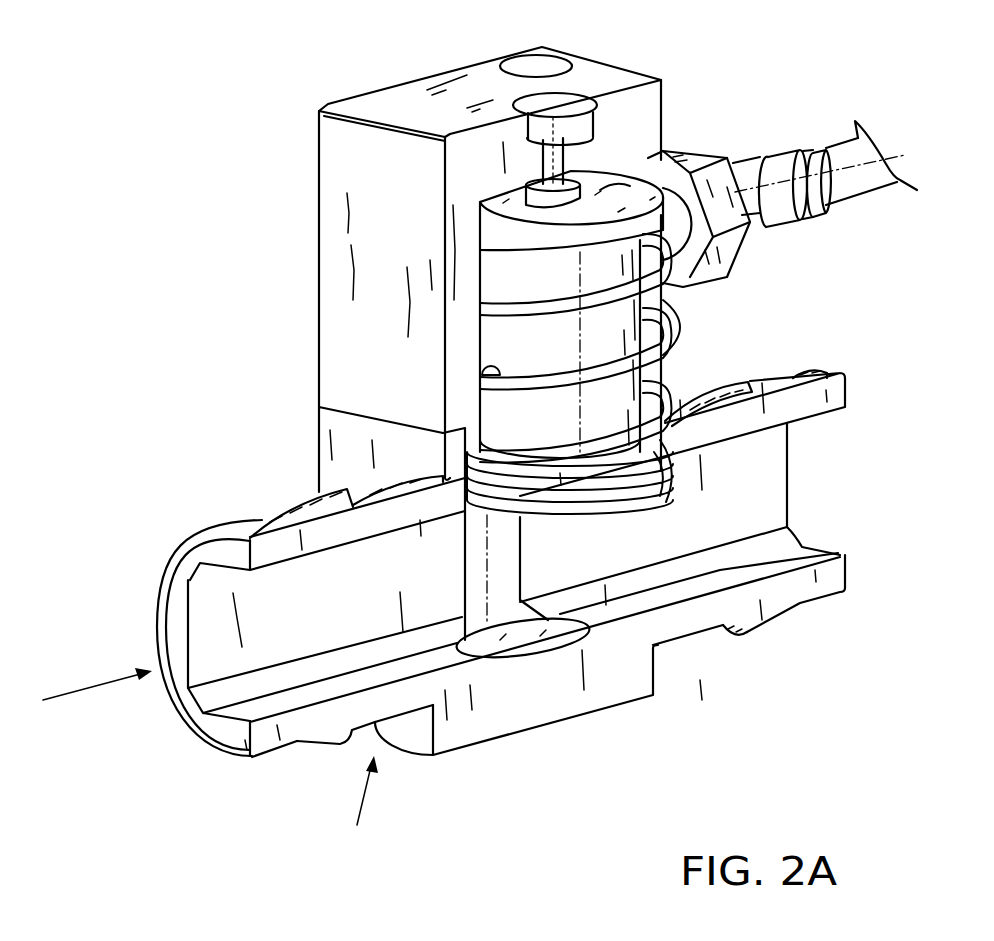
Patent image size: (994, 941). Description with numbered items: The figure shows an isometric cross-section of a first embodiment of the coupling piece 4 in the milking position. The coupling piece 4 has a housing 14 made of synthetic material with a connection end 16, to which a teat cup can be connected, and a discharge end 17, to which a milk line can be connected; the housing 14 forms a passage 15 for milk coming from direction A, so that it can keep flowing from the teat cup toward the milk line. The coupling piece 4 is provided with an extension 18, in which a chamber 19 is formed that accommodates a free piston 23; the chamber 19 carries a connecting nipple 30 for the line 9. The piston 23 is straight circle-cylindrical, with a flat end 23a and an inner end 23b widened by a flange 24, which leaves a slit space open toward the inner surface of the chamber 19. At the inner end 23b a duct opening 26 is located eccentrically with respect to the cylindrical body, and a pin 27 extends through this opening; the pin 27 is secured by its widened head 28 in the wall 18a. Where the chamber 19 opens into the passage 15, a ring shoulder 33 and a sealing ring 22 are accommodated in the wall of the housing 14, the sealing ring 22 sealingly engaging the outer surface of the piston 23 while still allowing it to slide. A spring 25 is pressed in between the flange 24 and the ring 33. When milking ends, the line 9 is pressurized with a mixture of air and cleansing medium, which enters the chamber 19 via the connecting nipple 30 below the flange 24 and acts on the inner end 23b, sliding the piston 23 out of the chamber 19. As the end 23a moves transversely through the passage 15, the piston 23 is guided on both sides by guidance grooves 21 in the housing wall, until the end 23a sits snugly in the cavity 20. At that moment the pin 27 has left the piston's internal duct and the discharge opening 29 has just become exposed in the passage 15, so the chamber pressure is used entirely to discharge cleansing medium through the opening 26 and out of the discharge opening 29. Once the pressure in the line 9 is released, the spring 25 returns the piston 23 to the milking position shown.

The coupling piece 4 is at (361, 807).
The line 9 is at (833, 150).
The housing 14 is at (627, 687).
The passage 15 is at (356, 612).
The connection end 16 is at (298, 733).
The discharge end 17 is at (777, 608).
The extension 18 is at (330, 272).
The wall 18a is at (398, 92).
The chamber 19 is at (497, 258).
The cavity 20 is at (517, 640).
The guidance grooves 21 is at (500, 578).
The sealing ring 22 is at (690, 475).
The free piston 23 is at (662, 318).
The flat end 23a is at (570, 514).
The inner end 23b is at (612, 180).
The flange 24 is at (692, 172).
The spring 25 is at (662, 347).
The duct opening 26 is at (575, 195).
The pin 27 is at (548, 168).
The widened head 28 is at (573, 117).
The discharge opening 29 is at (478, 361).
The connecting nipple 30 is at (766, 228).
The ring shoulder 33 is at (707, 387).
The direction of milk A is at (97, 698).